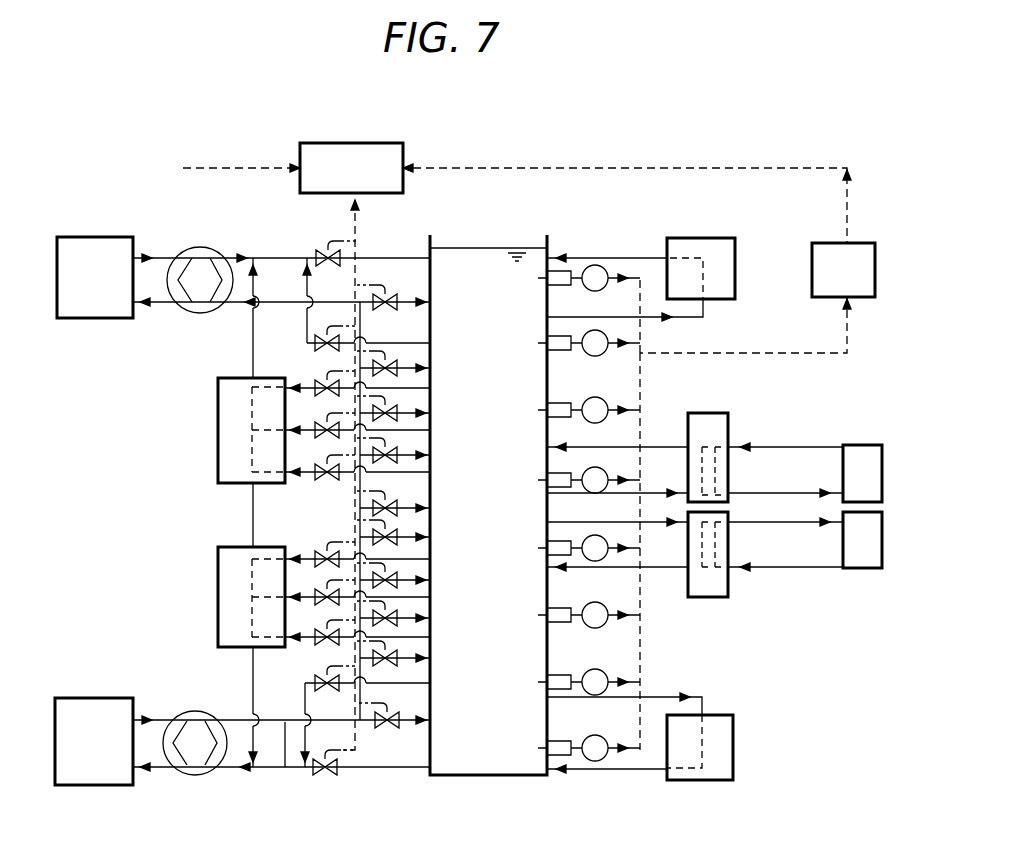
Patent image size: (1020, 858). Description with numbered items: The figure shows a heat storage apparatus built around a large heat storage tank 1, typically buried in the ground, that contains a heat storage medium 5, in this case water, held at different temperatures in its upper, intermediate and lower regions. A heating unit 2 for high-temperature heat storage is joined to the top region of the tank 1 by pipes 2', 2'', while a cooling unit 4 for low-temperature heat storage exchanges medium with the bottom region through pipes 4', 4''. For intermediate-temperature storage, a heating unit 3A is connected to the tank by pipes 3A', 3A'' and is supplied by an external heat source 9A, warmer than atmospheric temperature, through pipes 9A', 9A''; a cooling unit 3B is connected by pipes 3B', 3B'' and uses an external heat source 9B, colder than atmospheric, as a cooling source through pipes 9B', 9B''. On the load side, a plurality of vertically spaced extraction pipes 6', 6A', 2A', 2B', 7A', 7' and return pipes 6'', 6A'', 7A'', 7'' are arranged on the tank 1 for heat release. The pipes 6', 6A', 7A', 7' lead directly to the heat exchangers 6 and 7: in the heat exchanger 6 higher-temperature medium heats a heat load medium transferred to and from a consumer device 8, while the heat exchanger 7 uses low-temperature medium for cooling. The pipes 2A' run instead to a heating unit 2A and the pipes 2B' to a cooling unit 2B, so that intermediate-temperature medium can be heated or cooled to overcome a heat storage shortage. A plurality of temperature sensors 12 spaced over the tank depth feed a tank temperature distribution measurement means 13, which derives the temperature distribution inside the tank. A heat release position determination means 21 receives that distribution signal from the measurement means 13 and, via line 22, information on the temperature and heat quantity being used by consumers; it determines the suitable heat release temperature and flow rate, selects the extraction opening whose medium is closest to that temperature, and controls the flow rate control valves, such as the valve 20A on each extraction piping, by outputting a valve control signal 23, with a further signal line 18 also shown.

The heat storage tank 1 is at (455, 774).
The heating unit 2 is at (711, 258).
The pipe 2' is at (643, 320).
The pipe 2'' is at (607, 240).
The heating unit 2A is at (226, 430).
The extraction pipe 2A' is at (388, 382).
The cooling unit 2B is at (226, 597).
The extraction pipe 2B' is at (388, 551).
The heating unit 3A is at (727, 442).
The pipe 3A' is at (618, 477).
The pipe 3A'' is at (621, 418).
The cooling unit 3B is at (721, 573).
The pipe 3B' is at (617, 539).
The pipe 3B'' is at (617, 580).
The cooling unit 4 is at (717, 762).
The pipe 4' is at (634, 691).
The pipe 4'' is at (607, 786).
The heat storage medium 5 is at (478, 257).
The heat exchanger 6 is at (189, 297).
The extraction pipe 6' is at (281, 237).
The return pipe 6'' is at (281, 315).
The extraction pipe 6A' is at (399, 330).
The return pipe 6A'' is at (429, 409).
The heat exchanger 7 is at (190, 725).
The extraction pipe 7' is at (281, 780).
The return pipe 7'' is at (281, 763).
The extraction pipe 7A' is at (344, 683).
The return pipe 7A'' is at (427, 644).
The consumer device 8 is at (110, 315).
The external heat source 9A is at (856, 455).
The pipe 9A' is at (785, 429).
The pipe 9A'' is at (785, 477).
The external heat source 9B is at (854, 571).
The pipe 9B' is at (785, 581).
The pipe 9B'' is at (785, 539).
The temperature sensor 12 is at (563, 272).
The tank temperature distribution measurement means 13 is at (823, 247).
The signal line 18 is at (513, 166).
The valve 20A is at (328, 248).
The heat release position determination means 21 is at (373, 152).
The line 22 is at (210, 165).
The valve control signal 23 is at (366, 206).